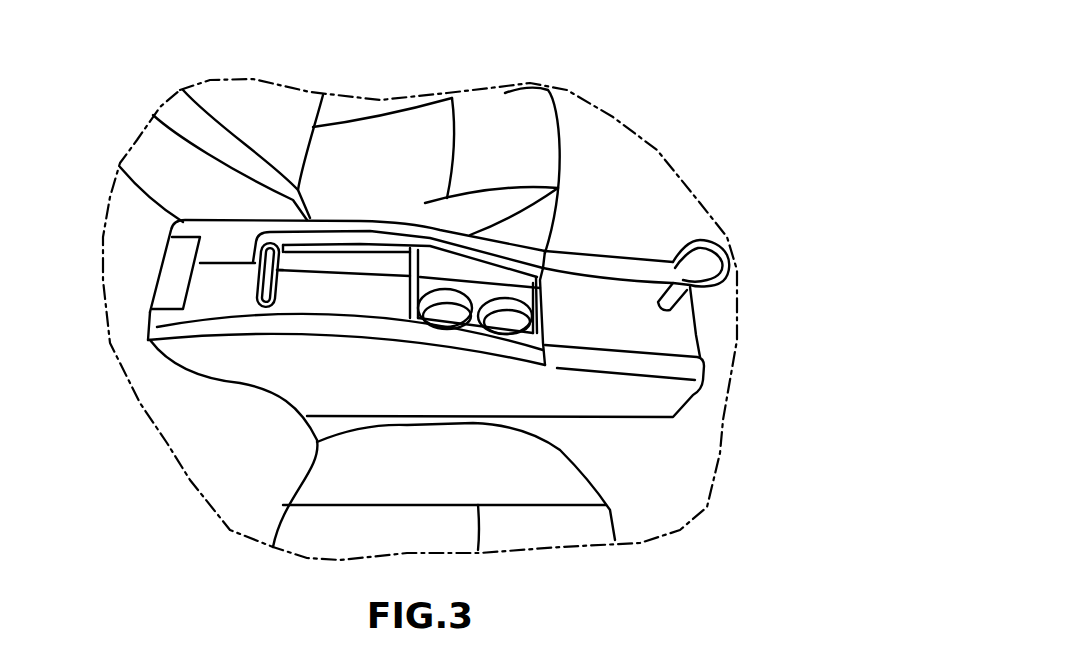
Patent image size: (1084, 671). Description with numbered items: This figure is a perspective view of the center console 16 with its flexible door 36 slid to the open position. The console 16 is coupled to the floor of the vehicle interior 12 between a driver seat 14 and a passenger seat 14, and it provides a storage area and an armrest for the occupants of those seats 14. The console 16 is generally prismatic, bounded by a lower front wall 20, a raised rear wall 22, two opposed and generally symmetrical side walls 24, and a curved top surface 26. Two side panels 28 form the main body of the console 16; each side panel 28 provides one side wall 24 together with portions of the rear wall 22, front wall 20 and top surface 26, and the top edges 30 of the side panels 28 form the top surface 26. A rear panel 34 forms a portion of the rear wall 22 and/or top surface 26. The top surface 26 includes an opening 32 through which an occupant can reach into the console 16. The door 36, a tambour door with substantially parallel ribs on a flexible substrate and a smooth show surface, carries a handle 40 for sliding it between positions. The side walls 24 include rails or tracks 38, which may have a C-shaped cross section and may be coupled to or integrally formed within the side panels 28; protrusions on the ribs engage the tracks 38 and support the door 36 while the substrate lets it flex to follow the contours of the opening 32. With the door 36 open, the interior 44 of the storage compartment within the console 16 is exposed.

The vehicle interior 12 is at (625, 163).
The seat 14 is at (540, 127).
The center console 16 is at (610, 262).
The front wall 20 is at (700, 325).
The rear wall 22 is at (147, 326).
The side walls 24 is at (440, 235).
The top surface 26 is at (208, 233).
The side panels 28 is at (640, 408).
The top edges 30 is at (670, 372).
The opening 32 is at (312, 252).
The rear panel 34 is at (172, 273).
The door 36 is at (340, 300).
The tracks 38 is at (358, 247).
The handle 40 is at (253, 298).
The interior 44 is at (282, 288).